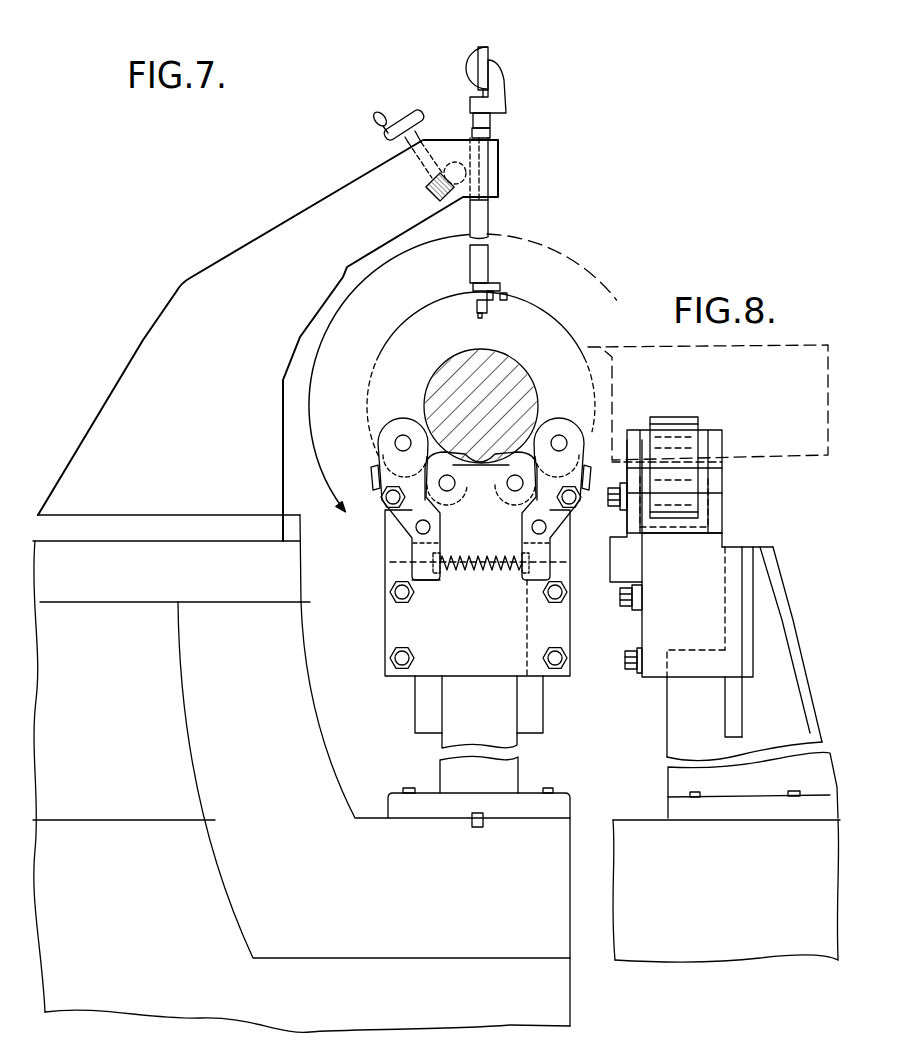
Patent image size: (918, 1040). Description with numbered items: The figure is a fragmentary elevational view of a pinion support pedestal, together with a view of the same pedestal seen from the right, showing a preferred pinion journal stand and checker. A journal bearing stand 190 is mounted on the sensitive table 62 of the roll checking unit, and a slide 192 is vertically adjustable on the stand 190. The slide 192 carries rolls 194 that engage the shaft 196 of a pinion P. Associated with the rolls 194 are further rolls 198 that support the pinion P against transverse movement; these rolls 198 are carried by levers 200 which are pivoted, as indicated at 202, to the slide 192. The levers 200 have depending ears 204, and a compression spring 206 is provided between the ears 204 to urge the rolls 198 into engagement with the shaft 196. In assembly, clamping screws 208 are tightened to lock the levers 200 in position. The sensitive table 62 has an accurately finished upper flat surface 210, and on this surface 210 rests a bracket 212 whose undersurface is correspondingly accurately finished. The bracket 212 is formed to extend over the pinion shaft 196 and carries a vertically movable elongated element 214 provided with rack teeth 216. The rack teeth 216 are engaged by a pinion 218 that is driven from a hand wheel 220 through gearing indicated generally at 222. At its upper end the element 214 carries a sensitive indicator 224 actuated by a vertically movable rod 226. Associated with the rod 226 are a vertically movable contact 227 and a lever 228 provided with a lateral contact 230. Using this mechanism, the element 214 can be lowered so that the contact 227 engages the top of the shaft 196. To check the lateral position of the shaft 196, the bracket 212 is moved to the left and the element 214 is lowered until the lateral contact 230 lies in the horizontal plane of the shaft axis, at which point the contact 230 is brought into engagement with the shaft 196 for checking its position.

In FIG. 7, the sensitive table 62 is at (368, 818).
In FIG. 7, the journal bearing stand 190 is at (543, 722).
In FIG. 8, the journal bearing stand 190 is at (803, 657).
In FIG. 7, the slide 192 is at (397, 622).
In FIG. 8, the slide 192 is at (658, 677).
In FIG. 7, the rolls 194 is at (433, 392).
In FIG. 7, the shaft 196 is at (520, 378).
In FIG. 7, the rolls 198 is at (380, 422).
In FIG. 8, the rolls 198 is at (685, 417).
In FIG. 7, the levers 200 is at (397, 520).
In FIG. 8, the levers 200 is at (626, 548).
In FIG. 7, the pivot 202 is at (412, 537).
In FIG. 7, the depending ears 204 is at (432, 580).
In FIG. 7, the compression spring 206 is at (497, 570).
In FIG. 7, the clamping screws 208 is at (387, 487).
In FIG. 8, the clamping screws 208 is at (610, 497).
In FIG. 7, the upper flat surface 210 is at (88, 541).
In FIG. 7, the bracket 212 is at (232, 257).
In FIG. 7, the elongated element 214 is at (489, 224).
In FIG. 7, the rack teeth 216 is at (470, 262).
In FIG. 7, the pinion 218 is at (458, 132).
In FIG. 7, the hand wheel 220 is at (417, 127).
In FIG. 7, the gearing 222 is at (428, 188).
In FIG. 7, the sensitive indicator 224 is at (487, 52).
In FIG. 7, the rod 226 is at (490, 92).
In FIG. 7, the contact 227 is at (478, 313).
In FIG. 7, the lever 228 is at (488, 288).
In FIG. 7, the lateral contact 230 is at (504, 297).
In FIG. 7, the pinion P is at (588, 267).